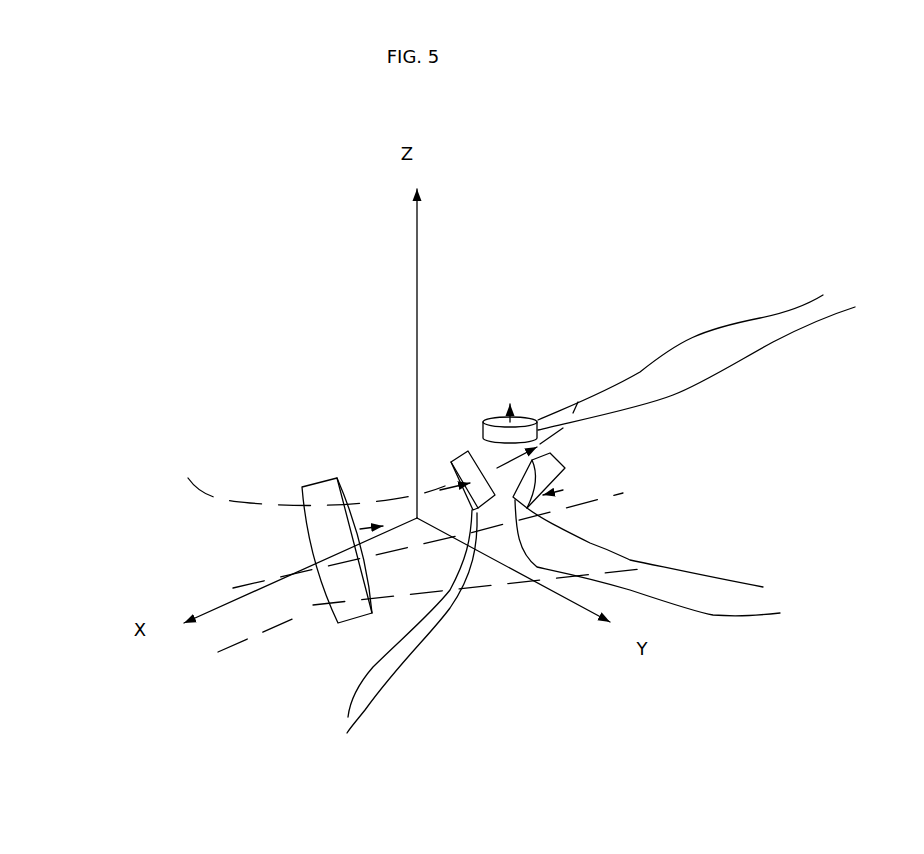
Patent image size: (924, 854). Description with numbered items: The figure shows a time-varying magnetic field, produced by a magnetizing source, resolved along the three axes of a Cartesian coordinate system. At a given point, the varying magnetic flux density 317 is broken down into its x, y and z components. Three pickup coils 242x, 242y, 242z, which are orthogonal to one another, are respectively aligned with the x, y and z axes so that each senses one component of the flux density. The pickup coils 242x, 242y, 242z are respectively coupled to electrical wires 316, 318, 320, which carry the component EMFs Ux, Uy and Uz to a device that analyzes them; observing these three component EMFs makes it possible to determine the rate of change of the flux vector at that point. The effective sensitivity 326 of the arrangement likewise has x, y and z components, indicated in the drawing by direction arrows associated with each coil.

The pickup coil 242x is at (470, 436).
The pickup coil 242y is at (578, 452).
The pickup coil 242z is at (556, 401).
The effective sensitivity 326 is at (441, 476).
The electrical wire 320 is at (758, 333).
The electrical wire 316 is at (382, 685).
The varying magnetic flux density 317 is at (512, 468).
The electrical wire 318 is at (755, 597).